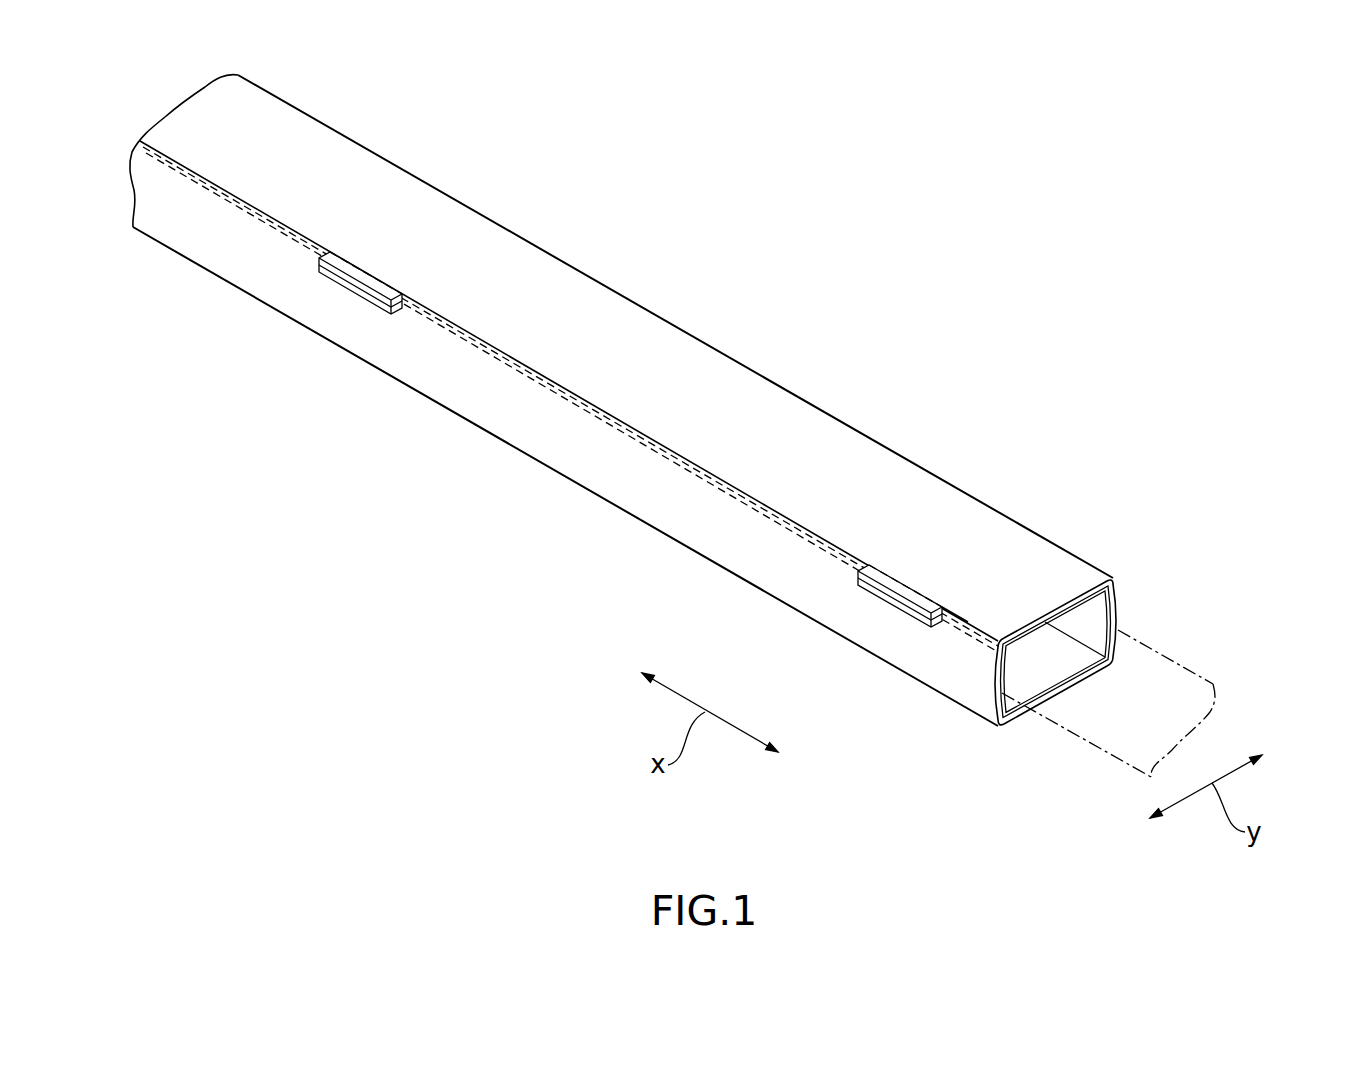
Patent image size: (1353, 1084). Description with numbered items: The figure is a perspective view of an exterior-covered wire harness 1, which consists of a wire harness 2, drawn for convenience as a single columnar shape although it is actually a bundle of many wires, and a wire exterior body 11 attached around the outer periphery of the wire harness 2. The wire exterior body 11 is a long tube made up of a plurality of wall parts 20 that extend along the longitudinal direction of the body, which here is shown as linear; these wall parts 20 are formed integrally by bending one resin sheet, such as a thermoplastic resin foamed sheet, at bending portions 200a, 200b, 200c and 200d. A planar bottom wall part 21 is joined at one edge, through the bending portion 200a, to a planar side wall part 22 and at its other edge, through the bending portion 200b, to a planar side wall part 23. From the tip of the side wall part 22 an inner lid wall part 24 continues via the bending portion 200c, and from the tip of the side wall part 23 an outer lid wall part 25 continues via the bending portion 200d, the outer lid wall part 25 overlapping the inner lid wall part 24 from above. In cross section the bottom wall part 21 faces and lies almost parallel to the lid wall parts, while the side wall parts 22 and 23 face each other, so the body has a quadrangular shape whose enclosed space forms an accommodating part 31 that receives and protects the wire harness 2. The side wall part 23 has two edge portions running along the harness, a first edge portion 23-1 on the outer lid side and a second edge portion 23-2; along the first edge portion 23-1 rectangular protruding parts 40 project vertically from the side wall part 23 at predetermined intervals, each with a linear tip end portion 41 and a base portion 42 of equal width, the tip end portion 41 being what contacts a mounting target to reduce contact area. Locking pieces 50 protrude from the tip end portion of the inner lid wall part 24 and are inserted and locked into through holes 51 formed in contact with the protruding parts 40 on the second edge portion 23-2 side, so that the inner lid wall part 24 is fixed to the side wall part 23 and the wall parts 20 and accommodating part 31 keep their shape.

The exterior-covered wire harness 1 is at (912, 340).
The wire harness 2 is at (1158, 642).
The wire exterior body 11 is at (1110, 488).
The wall parts 20 is at (948, 481).
The bottom wall part 21 is at (1053, 682).
The side wall part 22 is at (1133, 630).
The side wall part 23 is at (975, 682).
The first edge portion 23-1 is at (690, 455).
The second edge portion 23-2 is at (655, 540).
The inner lid wall part 24 is at (1070, 620).
The outer lid wall part 25 is at (1025, 567).
The accommodating part 31 is at (1017, 660).
The protruding part 40 is at (330, 278).
The tip end portion 41 is at (357, 293).
The base portion 42 is at (372, 268).
The locking piece 50 is at (375, 303).
The through hole 51 is at (393, 310).
The bending portion 200a is at (1095, 676).
The bending portion 200b is at (977, 722).
The bending portion 200c is at (1085, 590).
The bending portion 200d is at (950, 640).